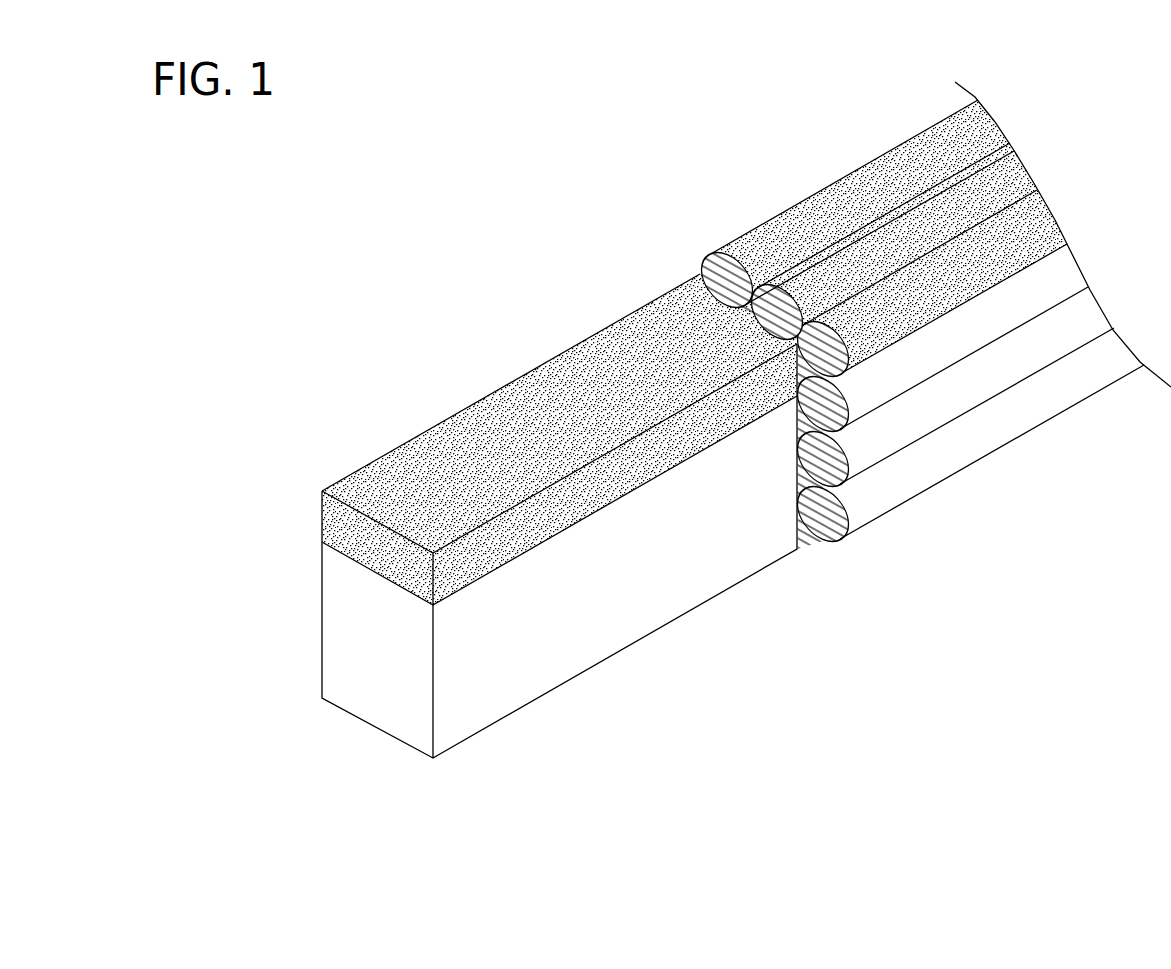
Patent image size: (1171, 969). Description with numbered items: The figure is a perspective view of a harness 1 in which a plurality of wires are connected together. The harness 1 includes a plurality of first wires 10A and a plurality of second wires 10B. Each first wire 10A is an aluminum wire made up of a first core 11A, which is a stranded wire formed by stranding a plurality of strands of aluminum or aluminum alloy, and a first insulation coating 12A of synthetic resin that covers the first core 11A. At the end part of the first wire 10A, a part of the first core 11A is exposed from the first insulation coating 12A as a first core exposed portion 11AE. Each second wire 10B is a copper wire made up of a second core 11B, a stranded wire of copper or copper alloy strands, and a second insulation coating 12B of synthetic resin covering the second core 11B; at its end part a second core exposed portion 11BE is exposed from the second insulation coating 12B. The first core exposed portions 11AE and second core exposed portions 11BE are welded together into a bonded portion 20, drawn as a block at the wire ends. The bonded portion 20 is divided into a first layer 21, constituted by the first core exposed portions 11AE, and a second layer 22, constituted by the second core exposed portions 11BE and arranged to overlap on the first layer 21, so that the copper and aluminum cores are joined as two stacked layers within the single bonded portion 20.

The harness 1 is at (505, 195).
The first wire 10A is at (995, 626).
The second wire 10B is at (777, 154).
The first core 11A is at (825, 557).
The first core exposed portion 11AE is at (809, 543).
The second core 11B is at (689, 260).
The second core exposed portion 11BE is at (700, 272).
The first insulation coating 12A is at (955, 465).
The second insulation coating 12B is at (785, 218).
The bonded portion 20 is at (255, 508).
The first layer 21 is at (333, 568).
The second layer 22 is at (325, 514).